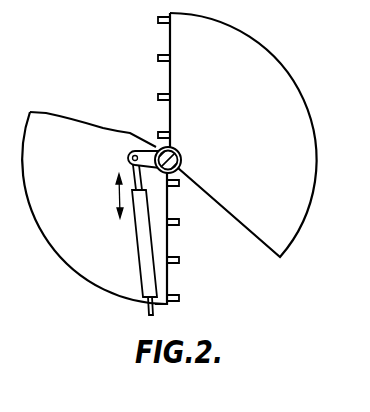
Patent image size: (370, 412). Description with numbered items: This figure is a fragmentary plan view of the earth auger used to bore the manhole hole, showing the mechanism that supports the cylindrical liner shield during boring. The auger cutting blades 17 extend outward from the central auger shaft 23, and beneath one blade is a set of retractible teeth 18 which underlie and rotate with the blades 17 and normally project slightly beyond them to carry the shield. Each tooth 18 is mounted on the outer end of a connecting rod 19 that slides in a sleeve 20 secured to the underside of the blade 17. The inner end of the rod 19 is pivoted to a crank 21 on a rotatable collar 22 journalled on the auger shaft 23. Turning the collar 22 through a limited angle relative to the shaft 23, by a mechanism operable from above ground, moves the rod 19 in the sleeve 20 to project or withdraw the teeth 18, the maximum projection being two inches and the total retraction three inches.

The auger cutting blades 17 is at (169, 46).
The retractible teeth 18 is at (146, 310).
The connecting rod 19 is at (133, 169).
The sleeve 20 is at (139, 240).
The crank 21 is at (144, 151).
The rotatable collar 22 is at (180, 153).
The auger shaft 23 is at (182, 162).